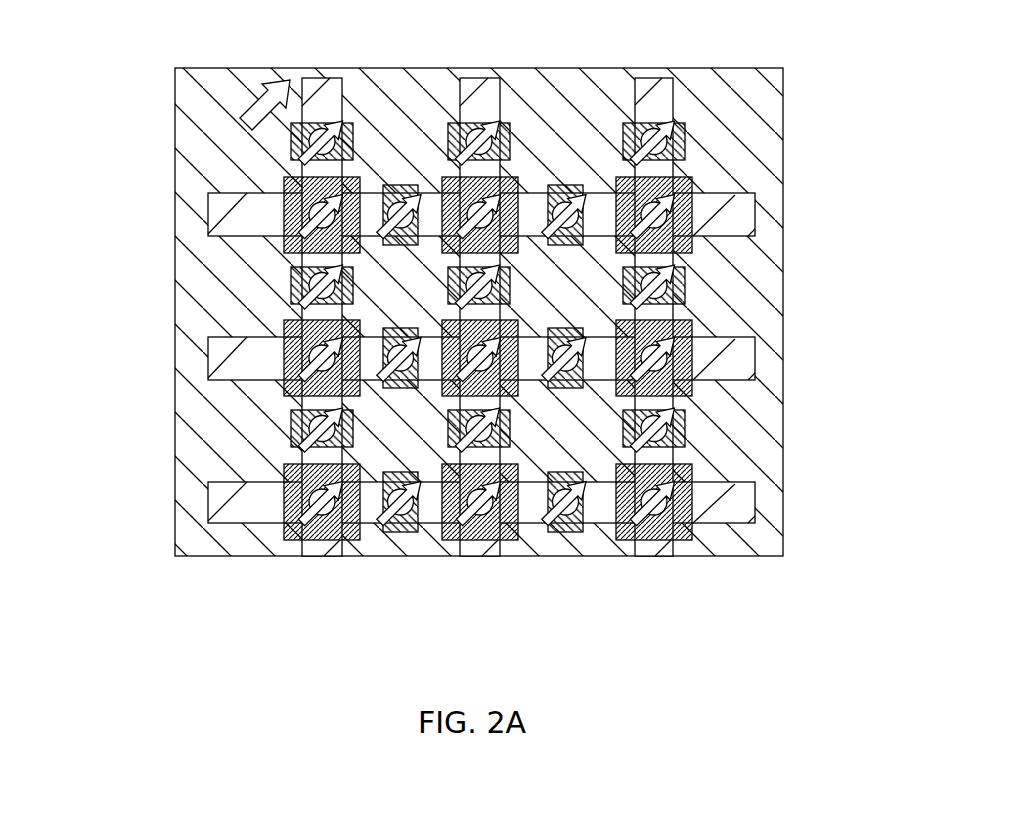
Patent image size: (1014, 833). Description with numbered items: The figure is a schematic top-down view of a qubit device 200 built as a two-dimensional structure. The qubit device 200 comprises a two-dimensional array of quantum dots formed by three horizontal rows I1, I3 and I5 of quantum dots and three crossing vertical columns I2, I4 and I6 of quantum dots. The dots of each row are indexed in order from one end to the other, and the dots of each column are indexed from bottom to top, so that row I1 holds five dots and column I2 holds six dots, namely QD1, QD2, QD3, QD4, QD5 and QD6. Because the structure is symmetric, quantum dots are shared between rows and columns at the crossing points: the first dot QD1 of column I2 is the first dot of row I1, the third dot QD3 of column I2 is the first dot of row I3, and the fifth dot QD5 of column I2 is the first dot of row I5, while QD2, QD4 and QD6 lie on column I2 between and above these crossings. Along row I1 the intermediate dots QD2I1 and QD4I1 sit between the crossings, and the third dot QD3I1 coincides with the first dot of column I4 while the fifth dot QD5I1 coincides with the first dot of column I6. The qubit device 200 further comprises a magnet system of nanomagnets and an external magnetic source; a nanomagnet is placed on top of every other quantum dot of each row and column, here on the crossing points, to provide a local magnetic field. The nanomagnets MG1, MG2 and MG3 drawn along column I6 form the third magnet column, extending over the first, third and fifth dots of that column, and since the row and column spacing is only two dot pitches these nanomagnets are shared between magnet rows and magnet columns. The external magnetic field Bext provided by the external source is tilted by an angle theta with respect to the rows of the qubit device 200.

The qubit device 200 is at (826, 56).
The row of quantum dots I1 is at (768, 503).
The column of quantum dots I2 is at (335, 568).
The row of quantum dots I3 is at (768, 362).
The column of quantum dots I4 is at (480, 568).
The row of quantum dots I5 is at (768, 212).
The column of quantum dots I6 is at (645, 568).
The external magnetic field Bext is at (234, 125).
The quantum dot QD1 is at (325, 540).
The quantum dot QD2 is at (295, 417).
The quantum dot QD3 is at (292, 350).
The quantum dot QD4 is at (295, 273).
The quantum dot QD5 is at (292, 206).
The quantum dot QD6 is at (318, 138).
The quantum dot QD2I1 is at (397, 536).
The quantum dot QD3I1 is at (500, 536).
The quantum dot QD4I1 is at (566, 538).
The quantum dot QD5I1 is at (696, 538).
The nanomagnet MG1 is at (695, 467).
The nanomagnet MG2 is at (695, 323).
The nanomagnet MG3 is at (695, 180).